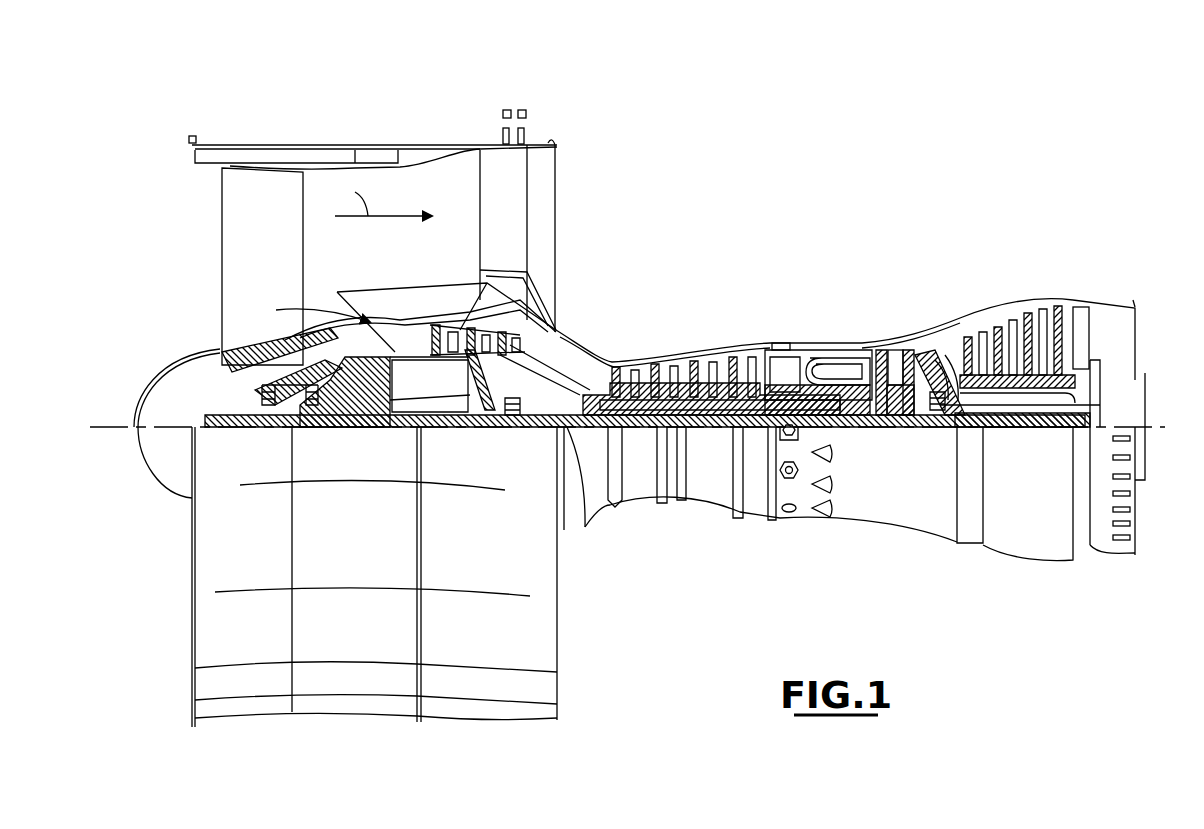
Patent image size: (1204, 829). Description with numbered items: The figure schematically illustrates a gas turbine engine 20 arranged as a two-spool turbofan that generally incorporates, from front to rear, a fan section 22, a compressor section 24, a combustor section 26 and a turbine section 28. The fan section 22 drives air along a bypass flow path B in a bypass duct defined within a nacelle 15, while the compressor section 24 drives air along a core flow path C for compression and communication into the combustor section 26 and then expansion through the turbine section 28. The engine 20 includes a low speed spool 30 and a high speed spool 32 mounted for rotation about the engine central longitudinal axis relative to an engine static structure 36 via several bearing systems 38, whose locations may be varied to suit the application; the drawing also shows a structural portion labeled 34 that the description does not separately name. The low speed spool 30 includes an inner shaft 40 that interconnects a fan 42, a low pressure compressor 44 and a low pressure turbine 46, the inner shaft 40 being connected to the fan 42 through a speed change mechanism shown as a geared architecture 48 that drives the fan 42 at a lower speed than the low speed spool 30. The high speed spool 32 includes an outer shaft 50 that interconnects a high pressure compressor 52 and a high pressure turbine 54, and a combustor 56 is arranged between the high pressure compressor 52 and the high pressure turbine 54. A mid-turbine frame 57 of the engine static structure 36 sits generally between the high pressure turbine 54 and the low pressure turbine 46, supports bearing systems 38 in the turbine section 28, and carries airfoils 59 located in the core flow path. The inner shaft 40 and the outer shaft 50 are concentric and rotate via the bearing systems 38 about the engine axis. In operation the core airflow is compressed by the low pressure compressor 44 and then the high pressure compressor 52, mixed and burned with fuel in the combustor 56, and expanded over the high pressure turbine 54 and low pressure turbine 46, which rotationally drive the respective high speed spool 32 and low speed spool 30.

The nacelle 15 is at (429, 145).
The gas turbine engine 20 is at (835, 193).
The fan section 22 is at (178, 118).
The compressor section 24 is at (412, 266).
The combustor section 26 is at (768, 266).
The turbine section 28 is at (875, 266).
The low speed spool 30 is at (713, 440).
The high speed spool 32 is at (760, 388).
The engine static structure 34 is at (1037, 395).
The engine static structure 36 is at (753, 525).
The bearing systems 38 is at (270, 428).
The inner shaft 40 is at (583, 490).
The fan 42 is at (245, 270).
The low pressure compressor 44 is at (490, 328).
The low pressure turbine 46 is at (1022, 335).
The geared architecture 48 is at (383, 428).
The outer shaft 50 is at (833, 428).
The high pressure compressor 52 is at (680, 360).
The high pressure turbine 54 is at (893, 348).
The combustor 56 is at (830, 365).
The mid-turbine frame 57 is at (937, 335).
The airfoils 59 is at (975, 430).